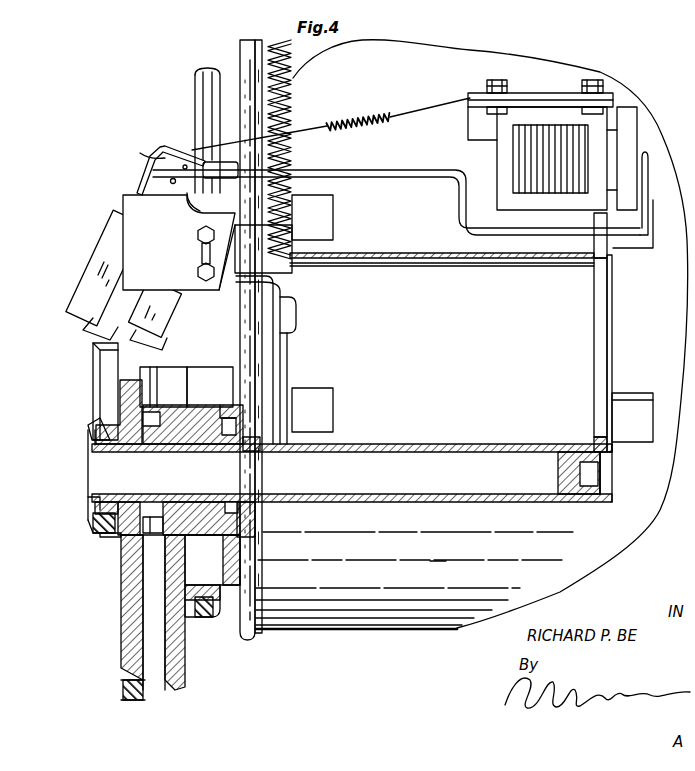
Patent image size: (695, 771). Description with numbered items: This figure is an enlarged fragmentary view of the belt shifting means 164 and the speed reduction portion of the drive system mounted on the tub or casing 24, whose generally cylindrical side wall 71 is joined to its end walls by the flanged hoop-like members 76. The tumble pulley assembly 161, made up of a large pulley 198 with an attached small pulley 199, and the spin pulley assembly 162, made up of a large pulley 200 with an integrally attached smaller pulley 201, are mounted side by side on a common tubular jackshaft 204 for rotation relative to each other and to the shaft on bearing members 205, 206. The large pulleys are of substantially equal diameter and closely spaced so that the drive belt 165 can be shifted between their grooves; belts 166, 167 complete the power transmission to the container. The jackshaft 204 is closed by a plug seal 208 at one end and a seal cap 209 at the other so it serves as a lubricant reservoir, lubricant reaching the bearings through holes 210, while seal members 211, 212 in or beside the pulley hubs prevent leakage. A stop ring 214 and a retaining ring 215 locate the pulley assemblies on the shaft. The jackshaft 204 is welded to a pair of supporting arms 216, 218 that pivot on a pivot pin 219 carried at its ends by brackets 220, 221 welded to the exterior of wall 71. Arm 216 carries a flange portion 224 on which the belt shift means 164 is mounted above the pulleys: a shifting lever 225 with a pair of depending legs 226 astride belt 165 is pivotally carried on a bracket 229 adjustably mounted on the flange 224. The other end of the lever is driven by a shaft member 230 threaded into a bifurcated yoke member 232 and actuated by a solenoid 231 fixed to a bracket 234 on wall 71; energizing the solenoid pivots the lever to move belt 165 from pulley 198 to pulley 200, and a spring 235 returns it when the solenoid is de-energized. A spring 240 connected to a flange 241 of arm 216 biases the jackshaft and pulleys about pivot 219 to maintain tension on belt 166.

The tub or casing 24 is at (377, 633).
The cylindrical side wall 71 is at (437, 553).
The flanged hoop-like member 76 is at (258, 636).
The tumble pulley assembly 161 is at (115, 598).
The spin pulley assembly 162 is at (200, 652).
The belt shifting means 164 is at (128, 152).
The belt 165 is at (137, 701).
The belt 166 is at (107, 538).
The belt 167 is at (196, 645).
The large pulley 198 is at (125, 650).
The small pulley 199 is at (92, 521).
The large pulley 200 is at (186, 686).
The small pulley 201 is at (204, 618).
The jackshaft 204 is at (397, 502).
The bearing member 205 is at (172, 448).
The bearing member 206 is at (118, 447).
The plug seal 208 is at (558, 468).
The seal cap 209 is at (92, 454).
The holes 210 is at (215, 503).
The seal member 211 is at (155, 512).
The seal member 212 is at (228, 503).
The stop ring 214 is at (255, 452).
The retaining ring 215 is at (95, 501).
The supporting arm 216 is at (287, 355).
The supporting arm 218 is at (595, 335).
The pivot pin 219 is at (448, 266).
The bracket 220 is at (608, 366).
The bracket 221 is at (290, 378).
The flange portion 224 is at (258, 256).
The shifting lever 225 is at (115, 232).
The depending legs 226 is at (90, 290).
The bracket 229 is at (135, 250).
The shaft member 230 is at (427, 180).
The solenoid 231 is at (505, 158).
The bifurcated yoke member 232 is at (200, 160).
The bracket 234 is at (537, 95).
The spring 235 is at (365, 116).
The spring 240 is at (296, 64).
The flange 241 is at (284, 328).